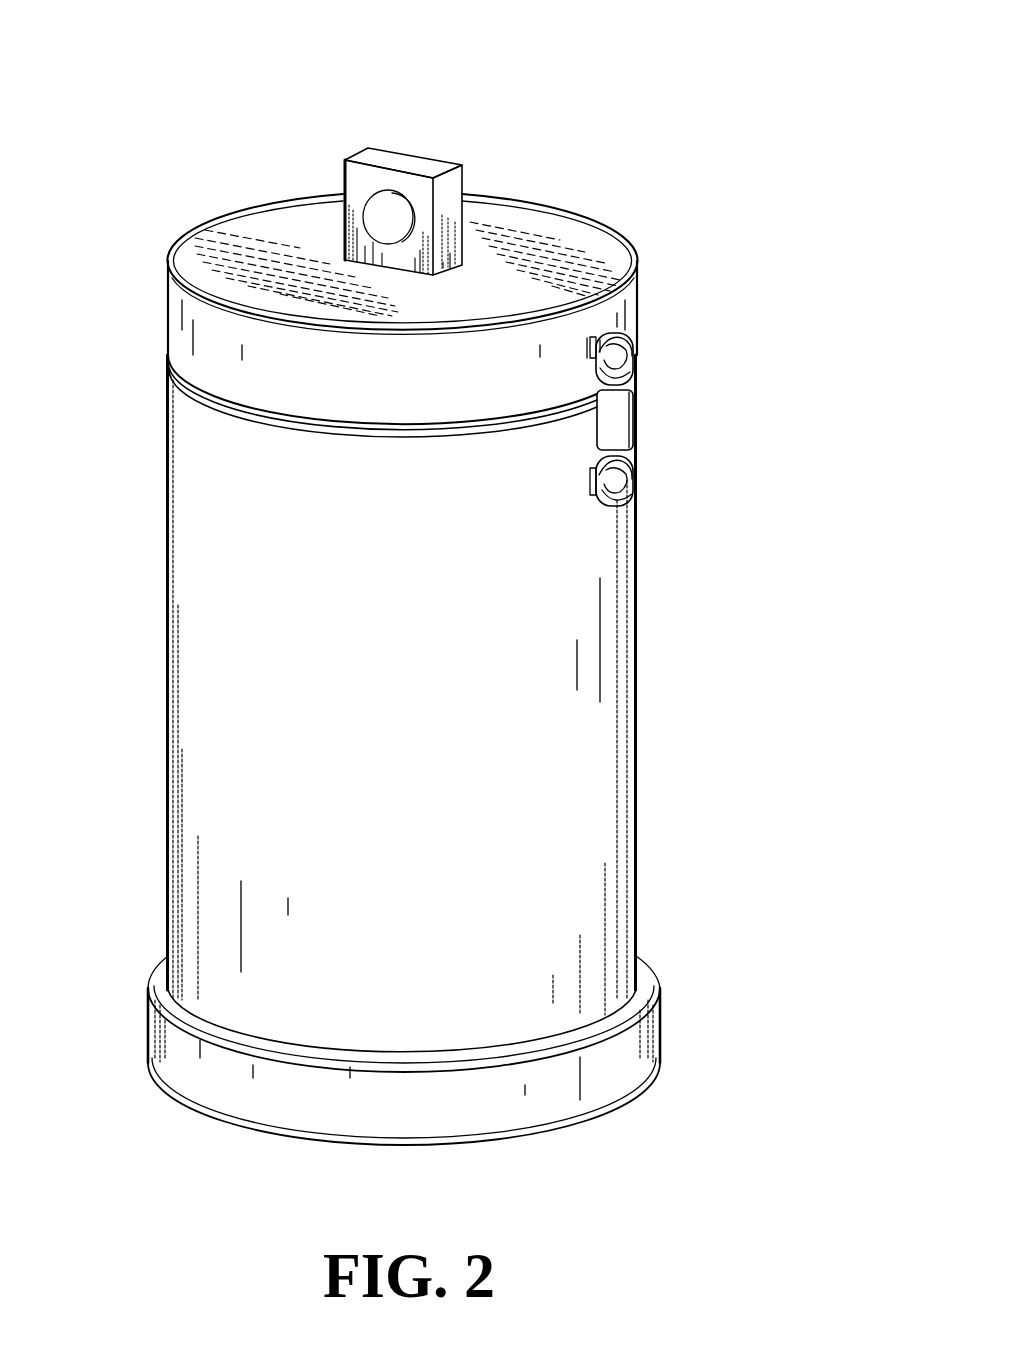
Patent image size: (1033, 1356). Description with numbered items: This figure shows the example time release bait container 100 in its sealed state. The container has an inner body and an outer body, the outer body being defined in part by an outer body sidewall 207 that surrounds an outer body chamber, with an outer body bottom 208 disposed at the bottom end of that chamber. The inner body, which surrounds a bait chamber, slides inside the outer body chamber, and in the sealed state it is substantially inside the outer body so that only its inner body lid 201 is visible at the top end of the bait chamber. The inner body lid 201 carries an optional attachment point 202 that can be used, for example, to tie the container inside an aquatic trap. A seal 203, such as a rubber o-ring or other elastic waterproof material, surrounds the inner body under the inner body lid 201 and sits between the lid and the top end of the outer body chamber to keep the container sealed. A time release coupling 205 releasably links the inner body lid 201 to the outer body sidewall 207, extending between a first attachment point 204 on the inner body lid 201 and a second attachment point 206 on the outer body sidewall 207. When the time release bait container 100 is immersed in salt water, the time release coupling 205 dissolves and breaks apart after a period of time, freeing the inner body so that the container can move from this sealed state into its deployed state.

The time release bait container 100 is at (552, 84).
The inner body lid 201 is at (582, 228).
The attachment point 202 is at (393, 160).
The seal 203 is at (272, 409).
The first attachment point 204 is at (637, 352).
The time release coupling 205 is at (612, 422).
The second attachment point 206 is at (633, 477).
The outer body sidewall 207 is at (600, 723).
The outer body bottom 208 is at (532, 1108).